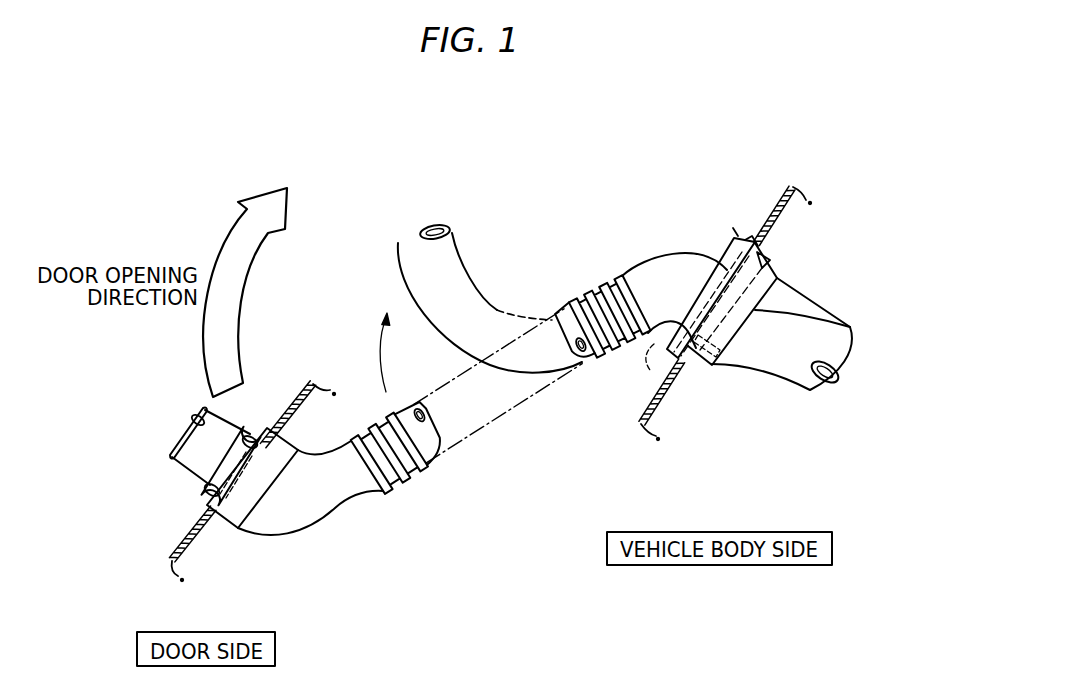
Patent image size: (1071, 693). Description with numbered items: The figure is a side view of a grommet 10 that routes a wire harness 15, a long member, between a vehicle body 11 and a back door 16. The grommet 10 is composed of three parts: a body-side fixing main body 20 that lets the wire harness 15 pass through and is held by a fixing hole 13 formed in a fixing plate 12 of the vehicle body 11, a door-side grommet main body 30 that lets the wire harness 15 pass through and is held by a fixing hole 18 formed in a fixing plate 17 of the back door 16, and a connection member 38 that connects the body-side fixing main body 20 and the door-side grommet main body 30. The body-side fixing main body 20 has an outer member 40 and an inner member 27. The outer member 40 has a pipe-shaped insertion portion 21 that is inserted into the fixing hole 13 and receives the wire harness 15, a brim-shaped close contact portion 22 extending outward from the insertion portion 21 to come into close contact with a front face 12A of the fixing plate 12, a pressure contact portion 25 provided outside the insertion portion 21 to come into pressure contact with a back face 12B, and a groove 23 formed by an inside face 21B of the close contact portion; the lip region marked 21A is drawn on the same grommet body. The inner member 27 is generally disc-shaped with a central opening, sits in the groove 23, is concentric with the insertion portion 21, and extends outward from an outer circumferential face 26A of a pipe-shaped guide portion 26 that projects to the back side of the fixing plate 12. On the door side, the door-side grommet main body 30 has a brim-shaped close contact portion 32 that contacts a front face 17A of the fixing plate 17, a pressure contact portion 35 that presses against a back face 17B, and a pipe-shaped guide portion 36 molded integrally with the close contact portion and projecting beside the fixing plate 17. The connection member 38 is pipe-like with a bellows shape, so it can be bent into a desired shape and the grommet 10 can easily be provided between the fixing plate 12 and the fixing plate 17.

The grommet 10 is at (506, 264).
The vehicle body 11 is at (786, 219).
The fixing plate 12 is at (780, 210).
The front face 12A is at (625, 415).
The back face 12B is at (666, 426).
The fixing hole 13 is at (771, 271).
The wire harness 15 is at (192, 438).
The back door 16 is at (184, 527).
The fixing plate 17 is at (192, 542).
The front face 17A is at (310, 388).
The back face 17B is at (292, 410).
The fixing hole 18 is at (282, 512).
The body-side fixing main body 20 is at (706, 272).
The insertion portion 21 is at (688, 362).
The grommet lip 21A is at (694, 310).
The inside face 21B is at (718, 352).
The close contact portion 22 is at (690, 303).
The groove 23 is at (655, 362).
The pressure contact portion 25 is at (752, 308).
The guide portion 26 is at (854, 327).
The outer circumferential face 26A is at (797, 304).
The inner member 27 is at (733, 234).
The door-side grommet main body 30 is at (260, 412).
The close contact portion 32 is at (247, 528).
The pressure contact portion 35 is at (210, 489).
The guide portion 36 is at (228, 460).
The connection member 38 is at (415, 475).
The outer member 40 is at (698, 374).